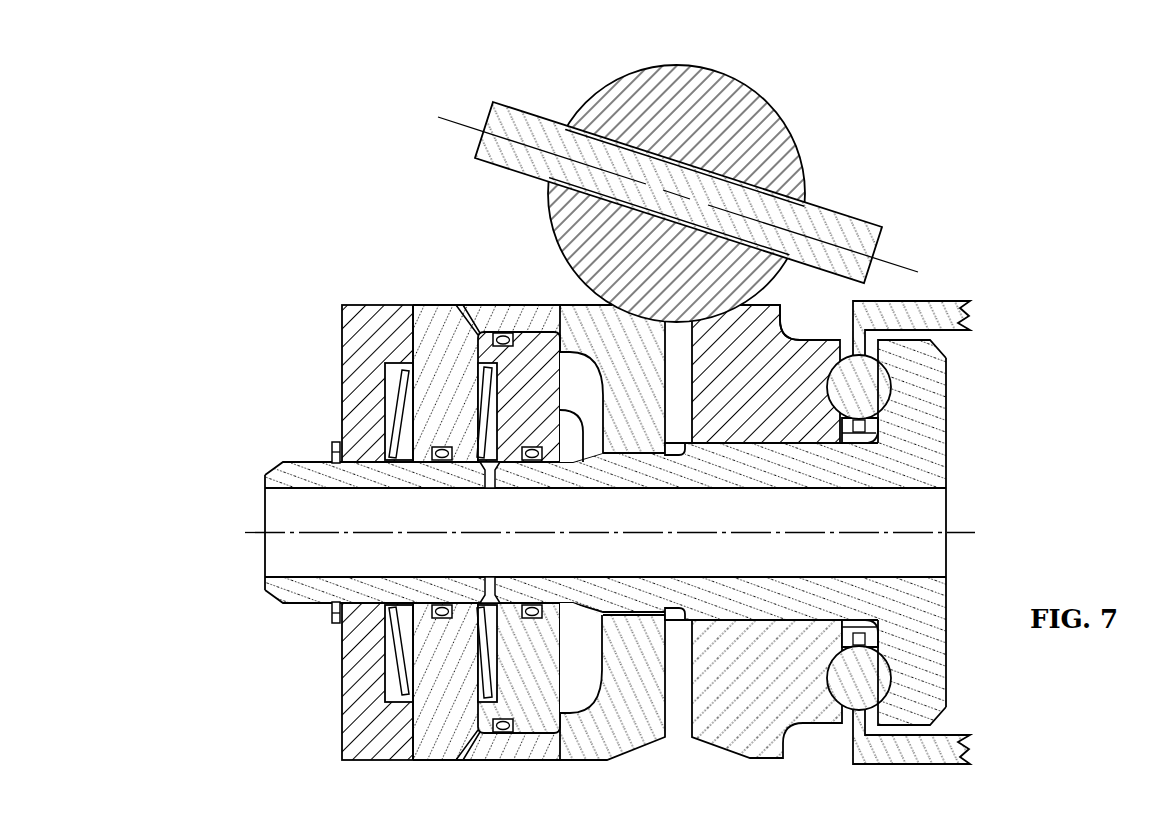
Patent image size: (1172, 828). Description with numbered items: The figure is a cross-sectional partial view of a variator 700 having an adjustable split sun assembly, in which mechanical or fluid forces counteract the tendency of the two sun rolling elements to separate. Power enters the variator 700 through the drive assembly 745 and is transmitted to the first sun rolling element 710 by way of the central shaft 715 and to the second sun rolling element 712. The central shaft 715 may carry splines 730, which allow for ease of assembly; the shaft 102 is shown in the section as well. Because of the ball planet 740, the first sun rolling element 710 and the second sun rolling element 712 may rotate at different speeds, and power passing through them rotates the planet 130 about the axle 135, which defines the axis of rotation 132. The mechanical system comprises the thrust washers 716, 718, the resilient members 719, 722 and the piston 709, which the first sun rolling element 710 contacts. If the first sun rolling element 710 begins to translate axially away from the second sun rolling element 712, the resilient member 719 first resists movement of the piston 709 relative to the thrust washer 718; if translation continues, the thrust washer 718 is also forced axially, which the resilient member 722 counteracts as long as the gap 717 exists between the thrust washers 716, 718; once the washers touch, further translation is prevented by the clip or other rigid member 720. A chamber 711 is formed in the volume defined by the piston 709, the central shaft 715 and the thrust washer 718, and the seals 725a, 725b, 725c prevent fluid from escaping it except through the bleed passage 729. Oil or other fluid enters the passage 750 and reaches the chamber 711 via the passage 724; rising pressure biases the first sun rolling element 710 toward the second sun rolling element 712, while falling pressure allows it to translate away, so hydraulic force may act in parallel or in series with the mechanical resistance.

The variator 700 is at (962, 118).
The planet 130 is at (582, 103).
The axis of rotation 132 is at (458, 130).
The axle 135 is at (476, 138).
The drive assembly 745 is at (947, 300).
The thrust washer 718 is at (432, 305).
The bleed passage 729 is at (461, 292).
The seal 725a is at (503, 333).
The seal 725b is at (441, 461).
The seal 725c is at (531, 461).
The first sun rolling element 710 is at (572, 305).
The gap 717 is at (412, 292).
The second sun rolling element 712 is at (783, 322).
The ball planet 740 is at (857, 355).
The thrust washer 716 is at (340, 363).
The central shaft 715 is at (948, 420).
The clip or other rigid member 720 is at (330, 452).
The shaft 102 is at (962, 532).
The passage 750 is at (283, 515).
The piston 709 is at (574, 418).
The splines 730 is at (668, 470).
The resilient member 719 is at (474, 412).
The passage 724 is at (491, 505).
The chamber 711 is at (497, 385).
The resilient member 722 is at (397, 650).